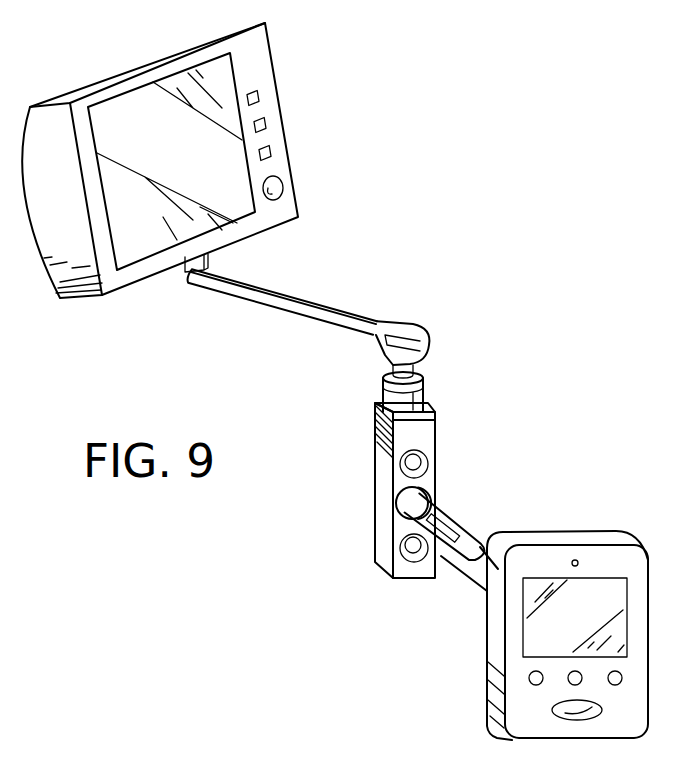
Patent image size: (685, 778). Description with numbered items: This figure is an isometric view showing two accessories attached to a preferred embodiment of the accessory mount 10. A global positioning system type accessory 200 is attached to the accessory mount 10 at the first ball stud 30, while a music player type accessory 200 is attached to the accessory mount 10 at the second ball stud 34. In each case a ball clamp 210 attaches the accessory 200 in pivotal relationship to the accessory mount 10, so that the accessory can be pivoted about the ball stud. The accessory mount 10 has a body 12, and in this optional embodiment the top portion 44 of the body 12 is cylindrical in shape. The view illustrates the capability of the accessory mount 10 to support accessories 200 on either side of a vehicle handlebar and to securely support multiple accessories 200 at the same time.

The accessory 200 is at (320, 107).
The ball clamp 210 is at (243, 300).
The first ball stud 30 is at (405, 343).
The top portion 44 is at (413, 393).
The accessory mount 10 is at (425, 475).
The body 12 is at (385, 527).
The second ball stud 34 is at (450, 528).